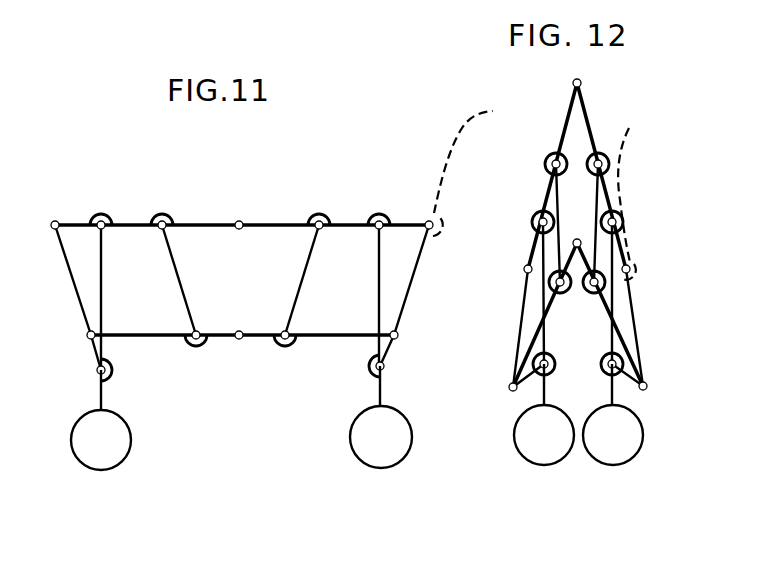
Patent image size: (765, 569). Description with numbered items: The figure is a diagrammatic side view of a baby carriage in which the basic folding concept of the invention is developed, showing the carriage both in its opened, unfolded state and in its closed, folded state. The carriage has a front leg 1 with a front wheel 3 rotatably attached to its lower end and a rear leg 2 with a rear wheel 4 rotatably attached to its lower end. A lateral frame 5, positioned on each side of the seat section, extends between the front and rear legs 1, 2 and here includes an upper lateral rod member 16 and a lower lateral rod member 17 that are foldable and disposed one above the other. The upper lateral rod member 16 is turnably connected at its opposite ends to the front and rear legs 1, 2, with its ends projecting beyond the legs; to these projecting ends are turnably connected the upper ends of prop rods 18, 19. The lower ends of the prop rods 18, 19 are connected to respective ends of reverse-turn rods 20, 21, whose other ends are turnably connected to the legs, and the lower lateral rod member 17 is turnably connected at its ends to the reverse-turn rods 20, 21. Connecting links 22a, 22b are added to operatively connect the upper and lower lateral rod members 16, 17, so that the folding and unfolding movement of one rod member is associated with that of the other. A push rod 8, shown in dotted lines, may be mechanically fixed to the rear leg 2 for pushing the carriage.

In FIG. 11, the front leg 1 is at (107, 399).
In FIG. 12, the front leg 1 is at (542, 397).
In FIG. 11, the rear leg 2 is at (379, 393).
In FIG. 12, the rear leg 2 is at (614, 395).
In FIG. 11, the front wheel 3 is at (133, 441).
In FIG. 12, the front wheel 3 is at (514, 445).
In FIG. 11, the rear wheel 4 is at (350, 437).
In FIG. 12, the rear wheel 4 is at (610, 443).
In FIG. 11, the lateral frame 5 is at (274, 222).
In FIG. 12, the lateral frame 5 is at (587, 107).
In FIG. 11, the push rod 8 is at (445, 160).
In FIG. 12, the push rod 8 is at (630, 142).
In FIG. 11, the upper lateral rod member 16 is at (213, 222).
In FIG. 12, the upper lateral rod member 16 is at (565, 124).
In FIG. 11, the lower lateral rod member 17 is at (222, 344).
In FIG. 12, the lower lateral rod member 17 is at (606, 305).
In FIG. 11, the prop rod 18 is at (66, 258).
In FIG. 12, the prop rod 18 is at (522, 326).
In FIG. 11, the prop rod 19 is at (411, 283).
In FIG. 12, the prop rod 19 is at (636, 323).
In FIG. 11, the reverse-turn rod 20 is at (93, 351).
In FIG. 12, the reverse-turn rod 20 is at (526, 385).
In FIG. 11, the reverse-turn rod 21 is at (390, 350).
In FIG. 12, the reverse-turn rod 21 is at (640, 392).
In FIG. 11, the connecting link 22a is at (181, 284).
In FIG. 12, the connecting link 22a is at (556, 200).
In FIG. 11, the connecting link 22b is at (297, 297).
In FIG. 12, the connecting link 22b is at (600, 200).